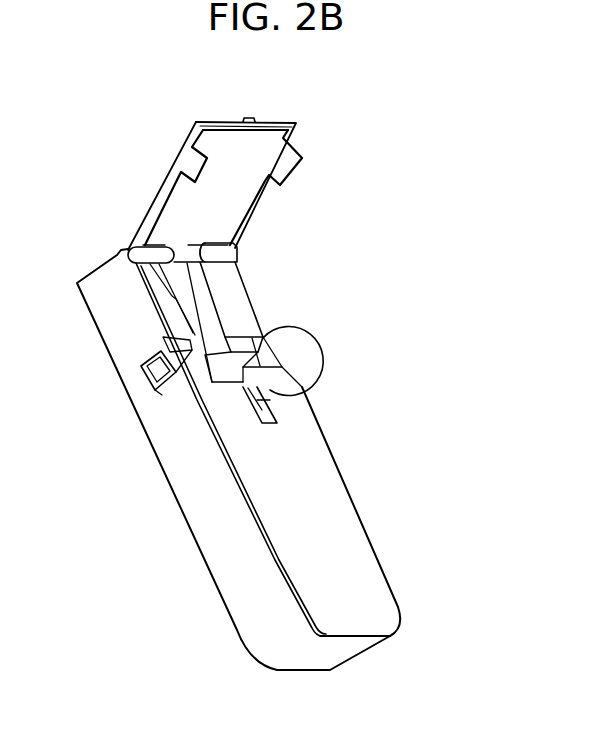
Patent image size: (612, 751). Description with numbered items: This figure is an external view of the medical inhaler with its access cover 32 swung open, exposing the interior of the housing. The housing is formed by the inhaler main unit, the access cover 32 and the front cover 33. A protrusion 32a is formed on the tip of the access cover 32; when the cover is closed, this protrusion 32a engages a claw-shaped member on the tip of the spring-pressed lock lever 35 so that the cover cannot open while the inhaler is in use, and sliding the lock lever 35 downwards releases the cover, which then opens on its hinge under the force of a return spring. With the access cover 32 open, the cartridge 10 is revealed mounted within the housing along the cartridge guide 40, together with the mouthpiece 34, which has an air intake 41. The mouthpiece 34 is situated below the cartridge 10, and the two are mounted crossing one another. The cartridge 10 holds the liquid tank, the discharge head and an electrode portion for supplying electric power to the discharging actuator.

The cartridge 10 is at (213, 352).
The access cover 32 is at (232, 177).
The protrusion 32a is at (248, 118).
The front cover 33 is at (335, 523).
The mouthpiece 34 is at (312, 358).
The lock lever 35 is at (265, 403).
The cartridge guide 40 is at (235, 305).
The air intake 41 is at (156, 375).